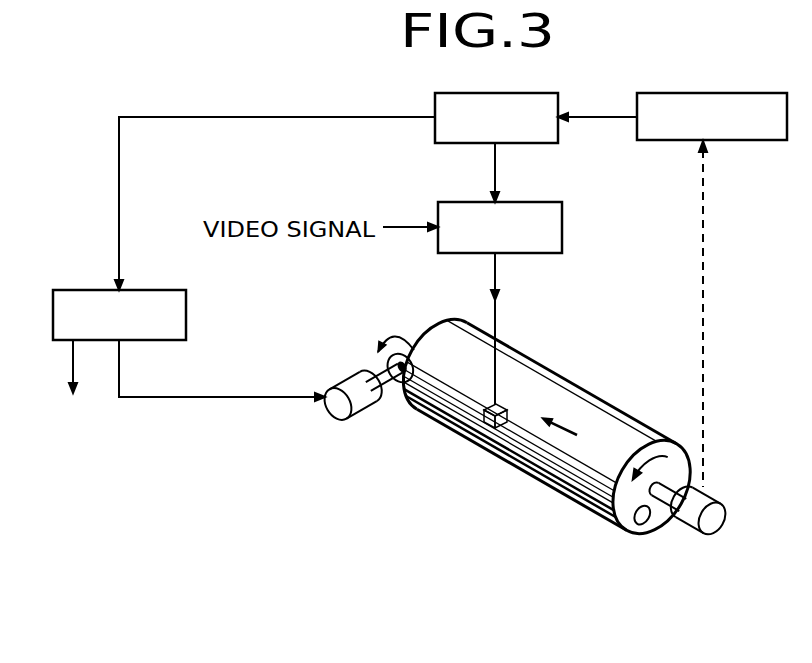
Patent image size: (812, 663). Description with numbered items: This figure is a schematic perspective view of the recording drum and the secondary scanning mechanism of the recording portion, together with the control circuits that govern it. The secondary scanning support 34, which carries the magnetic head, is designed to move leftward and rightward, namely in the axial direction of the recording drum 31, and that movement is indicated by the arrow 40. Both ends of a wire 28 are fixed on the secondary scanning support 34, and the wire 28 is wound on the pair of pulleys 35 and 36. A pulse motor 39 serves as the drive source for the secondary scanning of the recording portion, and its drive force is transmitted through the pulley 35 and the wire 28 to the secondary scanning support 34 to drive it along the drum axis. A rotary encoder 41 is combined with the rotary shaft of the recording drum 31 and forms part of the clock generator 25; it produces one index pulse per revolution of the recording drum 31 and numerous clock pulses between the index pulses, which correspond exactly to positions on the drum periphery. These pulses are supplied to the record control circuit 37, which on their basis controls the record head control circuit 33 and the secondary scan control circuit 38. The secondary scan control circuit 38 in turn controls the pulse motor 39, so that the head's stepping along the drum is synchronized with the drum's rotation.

The clock generator 25 is at (738, 98).
The wire 28 is at (563, 455).
The recording drum 31 is at (550, 378).
The record head control circuit 33 is at (533, 210).
The secondary scanning support 34 is at (482, 428).
The pulley 35 is at (385, 362).
The pulley 36 is at (647, 522).
The record control circuit 37 is at (556, 105).
The secondary scan control circuit 38 is at (75, 297).
The pulse motor 39 is at (370, 412).
The arrow 40 is at (569, 431).
The rotary encoder 41 is at (707, 493).